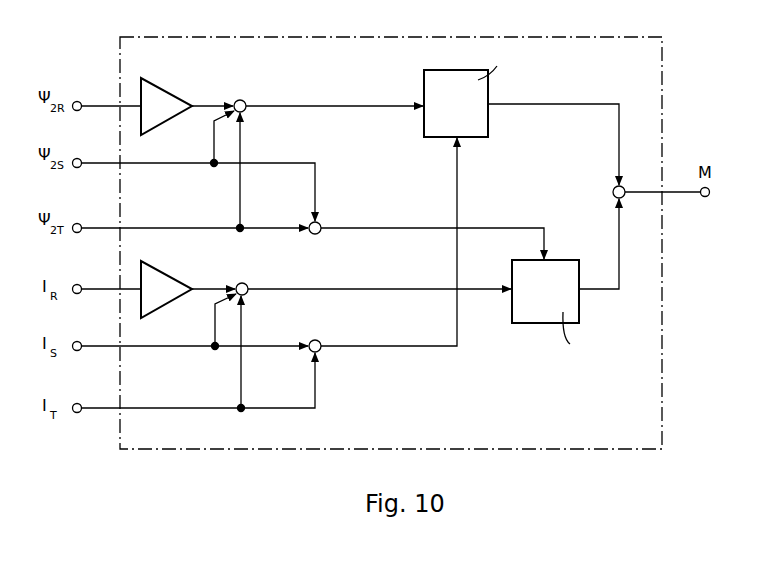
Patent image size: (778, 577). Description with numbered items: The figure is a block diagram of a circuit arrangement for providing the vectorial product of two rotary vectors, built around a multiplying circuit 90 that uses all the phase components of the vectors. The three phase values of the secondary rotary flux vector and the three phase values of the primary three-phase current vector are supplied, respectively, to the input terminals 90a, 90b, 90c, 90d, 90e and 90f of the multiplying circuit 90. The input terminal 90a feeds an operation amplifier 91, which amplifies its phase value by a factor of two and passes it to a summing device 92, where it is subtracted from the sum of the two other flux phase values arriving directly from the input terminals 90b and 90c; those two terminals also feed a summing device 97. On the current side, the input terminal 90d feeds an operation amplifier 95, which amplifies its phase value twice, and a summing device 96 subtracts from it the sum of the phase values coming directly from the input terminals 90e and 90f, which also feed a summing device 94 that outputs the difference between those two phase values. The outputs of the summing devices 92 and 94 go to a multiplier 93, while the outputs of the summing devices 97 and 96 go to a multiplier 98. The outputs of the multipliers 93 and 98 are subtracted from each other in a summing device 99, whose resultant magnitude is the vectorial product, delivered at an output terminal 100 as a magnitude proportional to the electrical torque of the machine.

The multiplying circuit 90 is at (320, 26).
The input terminal 90a is at (85, 95).
The input terminal 90b is at (85, 152).
The input terminal 90c is at (85, 217).
The input terminal 90d is at (85, 278).
The input terminal 90e is at (85, 335).
The input terminal 90f is at (85, 397).
The operation amplifier 91 is at (163, 91).
The summing device 92 is at (240, 99).
The multiplier 93 is at (453, 70).
The summing device 94 is at (319, 341).
The operation amplifier 95 is at (163, 274).
The summing device 96 is at (246, 284).
The summing device 97 is at (320, 223).
The multiplier 98 is at (544, 323).
The summing device 99 is at (624, 187).
The output terminal 100 is at (704, 197).